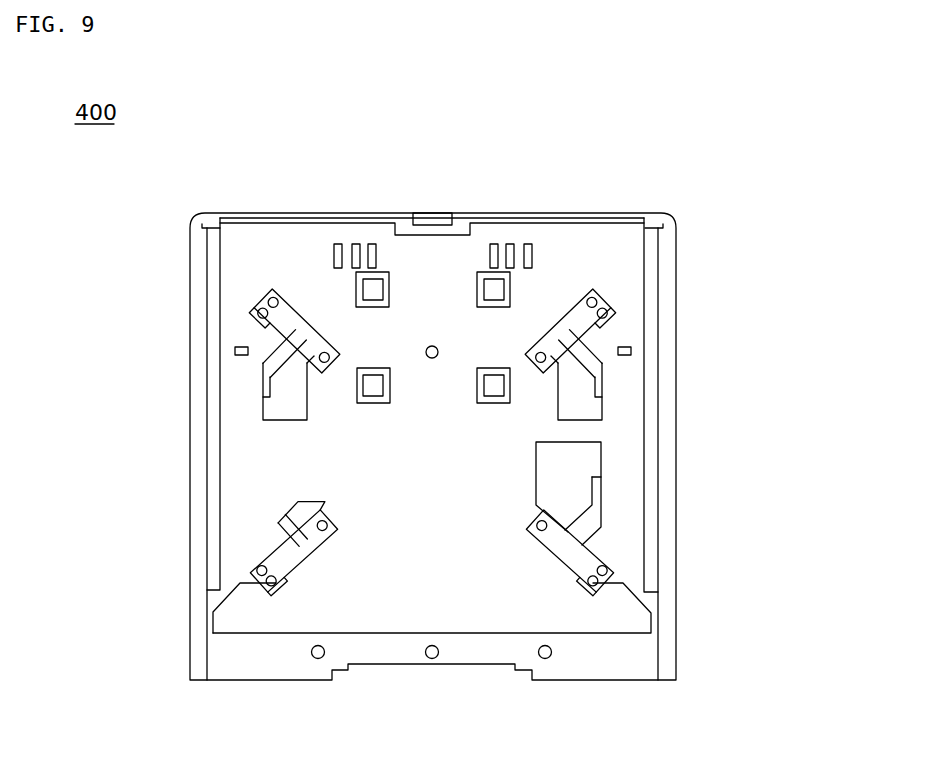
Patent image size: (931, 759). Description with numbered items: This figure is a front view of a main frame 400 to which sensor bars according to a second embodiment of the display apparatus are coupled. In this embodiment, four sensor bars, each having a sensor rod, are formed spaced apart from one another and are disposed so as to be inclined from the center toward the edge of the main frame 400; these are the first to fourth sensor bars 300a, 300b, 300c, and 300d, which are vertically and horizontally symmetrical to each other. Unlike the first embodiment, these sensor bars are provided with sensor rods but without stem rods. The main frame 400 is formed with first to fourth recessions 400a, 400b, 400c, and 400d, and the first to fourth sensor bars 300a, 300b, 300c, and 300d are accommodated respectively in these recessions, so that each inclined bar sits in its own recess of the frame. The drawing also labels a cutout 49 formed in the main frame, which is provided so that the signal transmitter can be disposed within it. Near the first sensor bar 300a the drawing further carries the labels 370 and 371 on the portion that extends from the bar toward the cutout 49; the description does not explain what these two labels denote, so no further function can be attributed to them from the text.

The main frame 400 is at (664, 198).
The first recession 400a is at (252, 326).
The second recession 400b is at (611, 296).
The third recession 400c is at (245, 561).
The fourth recession 400d is at (597, 548).
The first sensor bar 300a is at (200, 323).
The second sensor bar 300b is at (667, 285).
The third sensor bar 300c is at (209, 607).
The fourth sensor bar 300d is at (660, 584).
The connecting strap 370 is at (308, 338).
The bent portion 371 is at (267, 388).
The cutout 49 is at (288, 412).